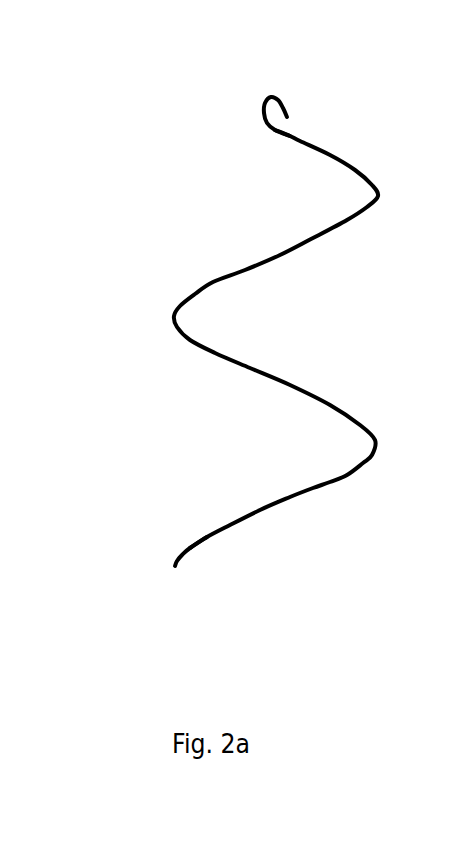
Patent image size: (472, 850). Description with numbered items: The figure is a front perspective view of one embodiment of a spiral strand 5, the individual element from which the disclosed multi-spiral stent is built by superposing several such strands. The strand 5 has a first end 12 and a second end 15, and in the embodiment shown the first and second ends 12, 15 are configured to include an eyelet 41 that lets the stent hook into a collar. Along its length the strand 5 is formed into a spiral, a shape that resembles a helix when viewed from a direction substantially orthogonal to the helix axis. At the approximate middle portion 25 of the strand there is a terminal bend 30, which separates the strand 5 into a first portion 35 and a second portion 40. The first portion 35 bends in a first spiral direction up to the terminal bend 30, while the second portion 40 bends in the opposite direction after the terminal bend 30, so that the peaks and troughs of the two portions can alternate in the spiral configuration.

The strand 5 is at (60, 121).
The first end 12 is at (317, 83).
The second end 15 is at (317, 83).
The eyelet 41 is at (277, 99).
The first portion 35 is at (287, 339).
The second portion 40 is at (315, 238).
The approximate middle portion 25 is at (116, 573).
The terminal bend 30 is at (173, 551).